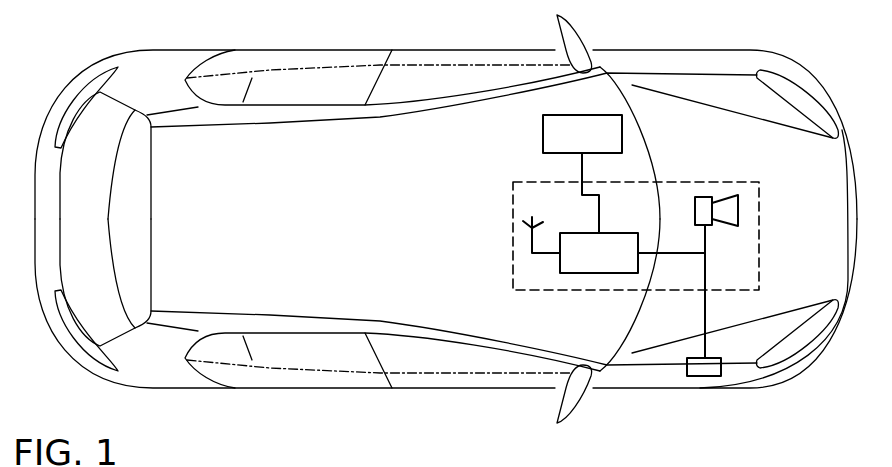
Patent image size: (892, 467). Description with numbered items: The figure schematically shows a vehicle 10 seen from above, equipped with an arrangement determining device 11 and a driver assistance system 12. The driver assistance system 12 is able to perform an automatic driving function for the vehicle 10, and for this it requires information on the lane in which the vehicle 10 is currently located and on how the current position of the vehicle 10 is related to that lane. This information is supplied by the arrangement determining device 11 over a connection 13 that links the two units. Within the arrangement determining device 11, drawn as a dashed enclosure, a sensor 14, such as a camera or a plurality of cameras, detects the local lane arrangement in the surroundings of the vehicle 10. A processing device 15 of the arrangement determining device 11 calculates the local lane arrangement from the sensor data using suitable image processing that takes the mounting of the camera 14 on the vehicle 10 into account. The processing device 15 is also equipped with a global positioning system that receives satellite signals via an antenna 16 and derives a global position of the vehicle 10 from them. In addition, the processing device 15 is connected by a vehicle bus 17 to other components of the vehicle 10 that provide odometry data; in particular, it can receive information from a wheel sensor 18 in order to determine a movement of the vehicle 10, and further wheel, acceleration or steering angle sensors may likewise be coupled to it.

The vehicle 10 is at (305, 50).
The arrangement determining device 11 is at (759, 232).
The driver assistance system 12 is at (543, 135).
The connection 13 is at (582, 167).
The sensor 14 is at (723, 199).
The processing device 15 is at (602, 273).
The antenna 16 is at (524, 228).
The vehicle bus 17 is at (705, 317).
The wheel sensor 18 is at (712, 375).